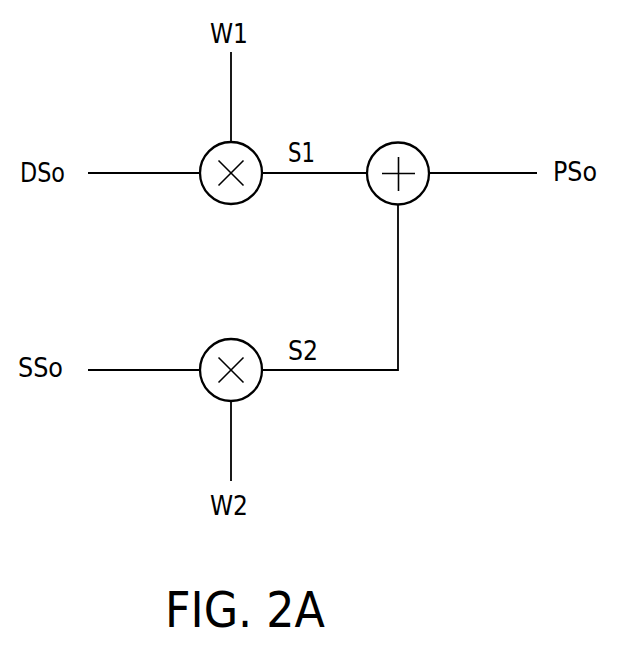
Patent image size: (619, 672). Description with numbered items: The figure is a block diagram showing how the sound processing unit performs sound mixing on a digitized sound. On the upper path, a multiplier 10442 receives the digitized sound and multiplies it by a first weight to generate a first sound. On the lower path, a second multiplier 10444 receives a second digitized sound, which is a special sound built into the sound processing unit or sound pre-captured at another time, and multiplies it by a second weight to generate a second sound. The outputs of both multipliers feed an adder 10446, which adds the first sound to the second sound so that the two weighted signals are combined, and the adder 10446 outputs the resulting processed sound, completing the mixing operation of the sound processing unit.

The multiplier 10442 is at (212, 148).
The multiplier 10444 is at (213, 344).
The adder 10446 is at (398, 141).